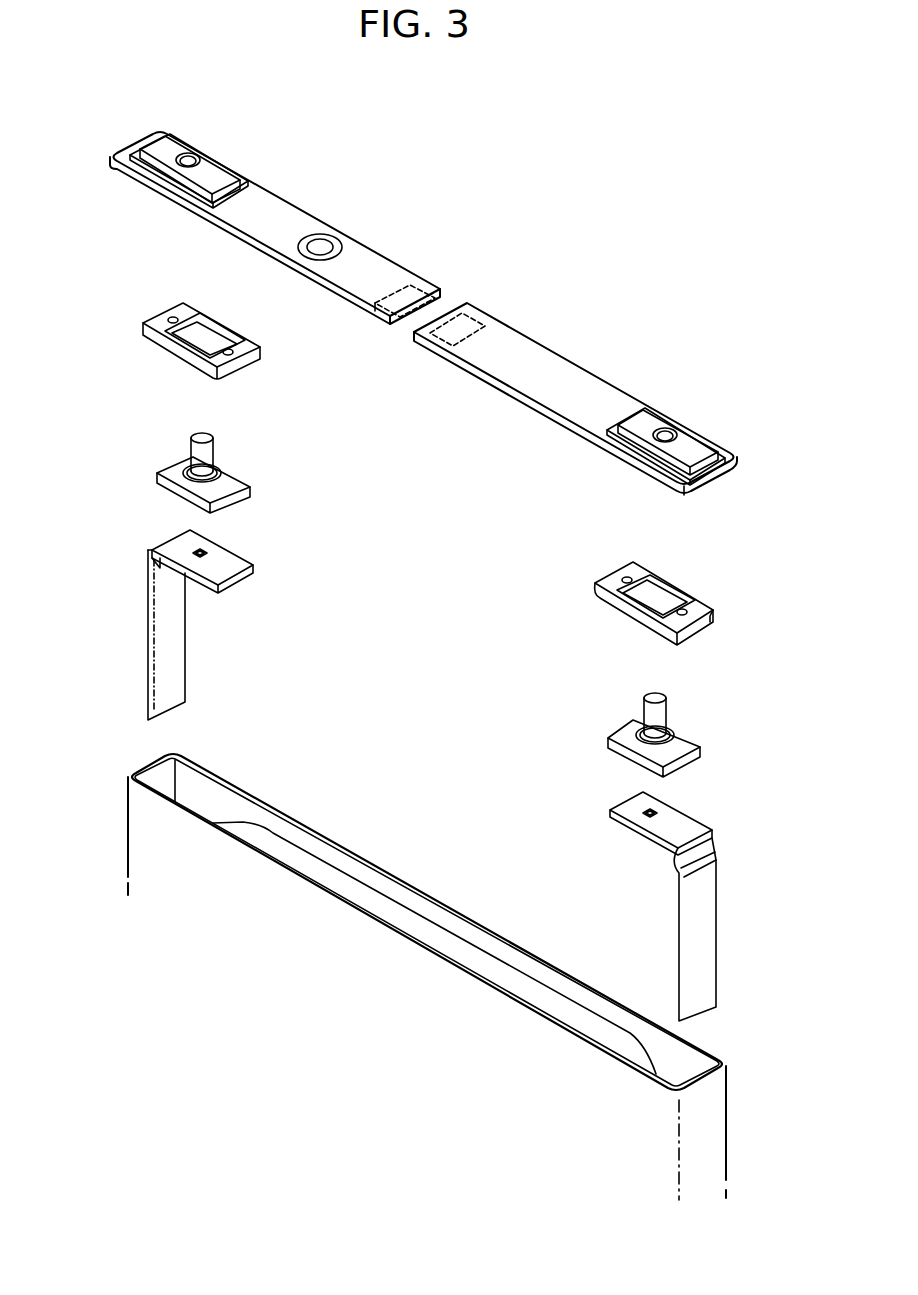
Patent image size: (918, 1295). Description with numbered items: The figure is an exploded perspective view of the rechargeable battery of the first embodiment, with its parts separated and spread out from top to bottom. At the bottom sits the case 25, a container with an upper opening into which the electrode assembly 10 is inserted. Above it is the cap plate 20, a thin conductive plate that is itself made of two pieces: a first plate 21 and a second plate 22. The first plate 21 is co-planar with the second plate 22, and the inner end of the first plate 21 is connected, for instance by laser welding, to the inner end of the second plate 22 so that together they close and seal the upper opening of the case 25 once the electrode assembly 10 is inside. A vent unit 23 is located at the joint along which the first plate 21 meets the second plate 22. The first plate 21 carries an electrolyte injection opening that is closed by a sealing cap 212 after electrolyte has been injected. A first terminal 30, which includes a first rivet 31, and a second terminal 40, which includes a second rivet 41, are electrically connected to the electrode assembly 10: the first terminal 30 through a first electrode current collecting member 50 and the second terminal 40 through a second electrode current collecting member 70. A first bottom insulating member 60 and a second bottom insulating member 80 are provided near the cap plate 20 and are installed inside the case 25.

The electrode assembly 10 is at (423, 937).
The cap plate 20 is at (488, 262).
The first plate 21 is at (272, 205).
The second plate 22 is at (607, 398).
The sealing cap 212 is at (325, 250).
The vent unit 23 is at (409, 314).
The case 25 is at (705, 1128).
The first terminal 30 is at (225, 158).
The first rivet 31 is at (168, 473).
The second terminal 40 is at (695, 428).
The second rivet 41 is at (685, 745).
The first electrode current collecting member 50 is at (135, 623).
The first bottom insulating member 60 is at (133, 326).
The second electrode current collecting member 70 is at (730, 908).
The second bottom insulating member 80 is at (728, 614).